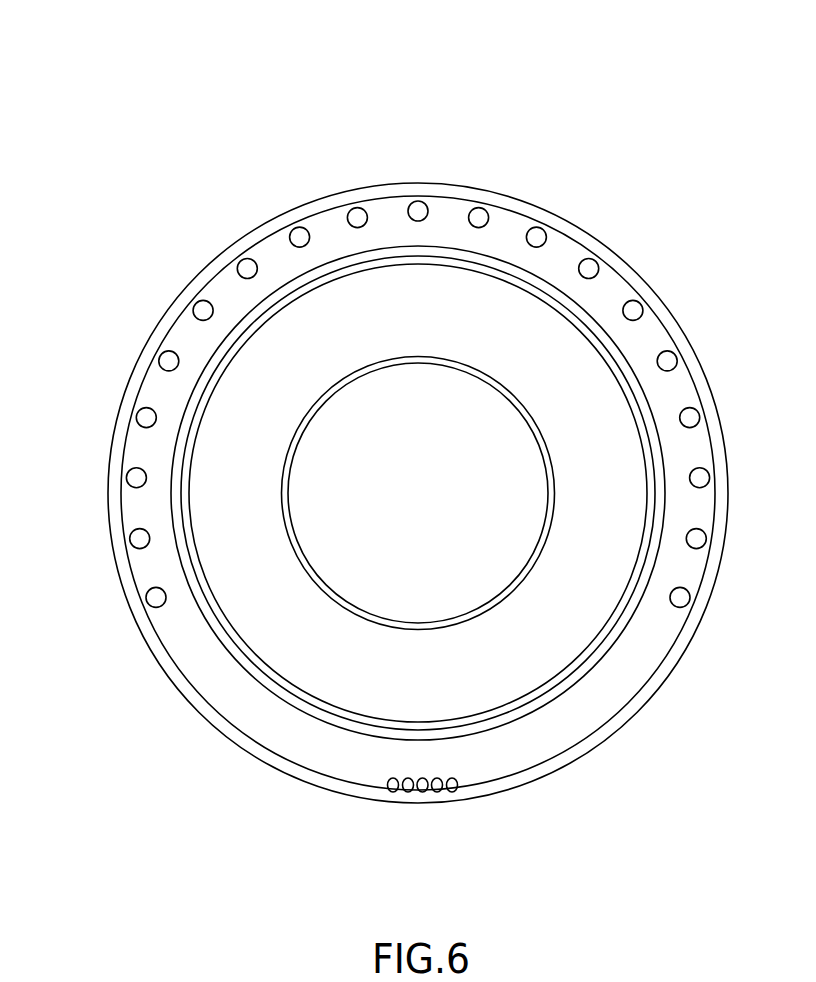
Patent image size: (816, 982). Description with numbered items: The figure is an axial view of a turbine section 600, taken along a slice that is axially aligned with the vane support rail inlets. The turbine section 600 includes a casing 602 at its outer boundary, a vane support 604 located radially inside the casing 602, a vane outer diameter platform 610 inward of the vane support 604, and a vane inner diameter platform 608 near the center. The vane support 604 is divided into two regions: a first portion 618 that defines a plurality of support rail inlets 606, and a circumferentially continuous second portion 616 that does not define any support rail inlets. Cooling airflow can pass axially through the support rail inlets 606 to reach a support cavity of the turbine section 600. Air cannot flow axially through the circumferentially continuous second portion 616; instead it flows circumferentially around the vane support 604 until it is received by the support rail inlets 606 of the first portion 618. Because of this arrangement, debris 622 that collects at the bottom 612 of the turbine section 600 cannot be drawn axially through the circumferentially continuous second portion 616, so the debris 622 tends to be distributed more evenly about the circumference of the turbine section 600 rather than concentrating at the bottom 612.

The turbine section 600 is at (149, 26).
The casing 602 is at (112, 438).
The vane support 604 is at (203, 678).
The support rail inlets 606 is at (148, 600).
The vane inner diameter platform 608 is at (290, 513).
The vane outer diameter platform 610 is at (260, 325).
The bottom 612 is at (426, 805).
The circumferentially continuous second portion 616 is at (260, 730).
The first portion 618 is at (152, 387).
The debris 622 is at (387, 790).